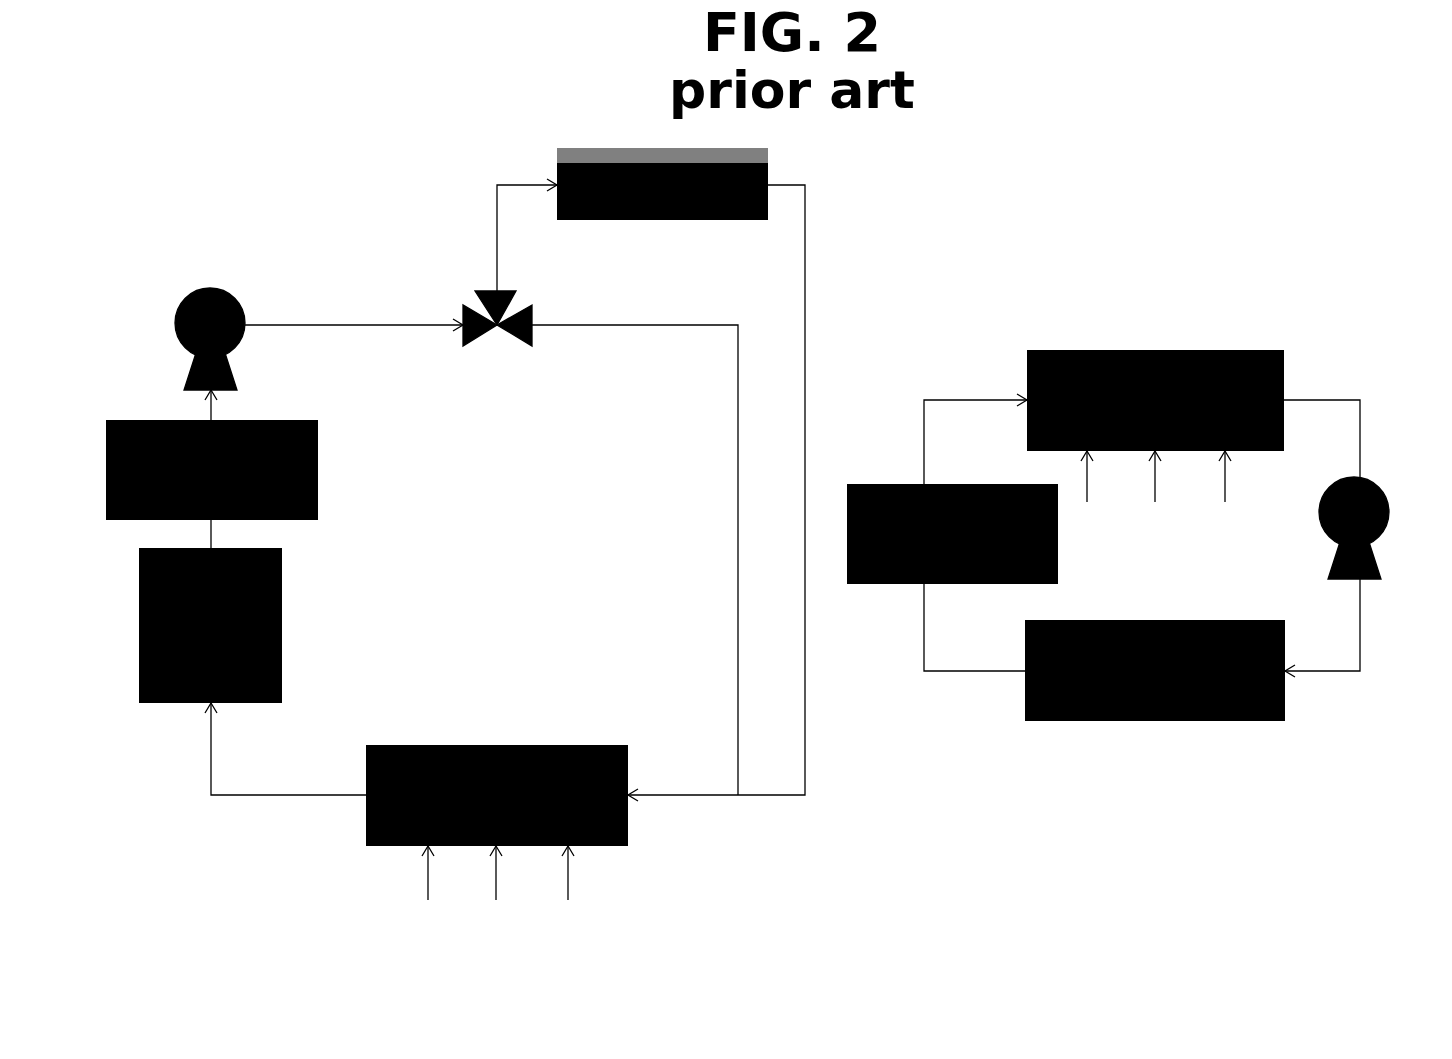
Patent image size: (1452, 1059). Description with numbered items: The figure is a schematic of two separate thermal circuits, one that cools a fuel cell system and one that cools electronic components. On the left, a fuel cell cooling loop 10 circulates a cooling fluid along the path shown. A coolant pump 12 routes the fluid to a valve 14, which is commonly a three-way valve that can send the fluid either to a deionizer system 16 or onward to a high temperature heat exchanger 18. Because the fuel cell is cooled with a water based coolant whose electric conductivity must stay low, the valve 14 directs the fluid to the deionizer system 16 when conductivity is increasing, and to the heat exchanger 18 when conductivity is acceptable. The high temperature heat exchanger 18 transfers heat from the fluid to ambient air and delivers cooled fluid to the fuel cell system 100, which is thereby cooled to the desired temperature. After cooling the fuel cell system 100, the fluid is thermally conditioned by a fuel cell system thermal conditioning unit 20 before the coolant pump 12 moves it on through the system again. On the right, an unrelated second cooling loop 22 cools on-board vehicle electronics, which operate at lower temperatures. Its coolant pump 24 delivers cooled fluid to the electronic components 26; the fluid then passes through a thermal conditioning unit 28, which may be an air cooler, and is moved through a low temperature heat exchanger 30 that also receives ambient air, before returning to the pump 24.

The fuel cell cooling loop 10 is at (508, 479).
The coolant pump 12 is at (165, 339).
The valve 14 is at (539, 296).
The deionizer system 16 is at (662, 184).
The high temperature heat exchanger 18 is at (497, 841).
The fuel cell system thermal conditioning unit 20 is at (212, 470).
The fuel cell system 100 is at (274, 617).
The second cooling loop 22 is at (1142, 439).
The coolant pump 24 is at (1381, 508).
The electronic components 26 is at (1155, 670).
The thermal conditioning unit 28 is at (952, 534).
The low temperature heat exchanger 30 is at (1155, 446).